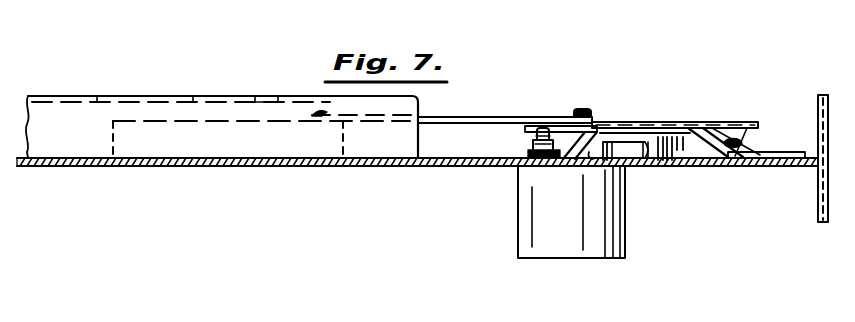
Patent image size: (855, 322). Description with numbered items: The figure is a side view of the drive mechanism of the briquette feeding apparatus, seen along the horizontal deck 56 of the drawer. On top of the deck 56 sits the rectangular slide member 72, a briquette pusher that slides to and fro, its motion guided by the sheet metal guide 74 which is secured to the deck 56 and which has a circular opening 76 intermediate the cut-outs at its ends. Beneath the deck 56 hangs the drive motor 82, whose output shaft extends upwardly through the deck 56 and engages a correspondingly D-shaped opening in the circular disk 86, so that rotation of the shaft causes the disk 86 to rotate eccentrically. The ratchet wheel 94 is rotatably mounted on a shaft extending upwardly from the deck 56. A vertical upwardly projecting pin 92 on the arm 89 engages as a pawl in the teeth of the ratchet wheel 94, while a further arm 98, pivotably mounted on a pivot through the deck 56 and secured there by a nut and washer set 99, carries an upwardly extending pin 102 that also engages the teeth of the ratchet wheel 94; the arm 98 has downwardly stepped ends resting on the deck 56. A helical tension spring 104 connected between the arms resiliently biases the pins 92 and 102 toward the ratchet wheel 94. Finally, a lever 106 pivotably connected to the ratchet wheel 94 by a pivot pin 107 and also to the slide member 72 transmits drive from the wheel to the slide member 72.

The sheet metal guide 74 is at (125, 96).
The circular opening 76 is at (196, 96).
The slide member 72 is at (372, 147).
The deck 56 is at (208, 167).
The lever 106 is at (497, 117).
The pivot pin 107 is at (581, 109).
The nut and washer set 99 is at (517, 146).
The disk 86 is at (590, 167).
The ratchet wheel 94 is at (640, 122).
The further arm 98 is at (652, 167).
The pin 102 is at (682, 117).
The pin 92 is at (700, 122).
The helical tension spring 104 is at (752, 134).
The arm 89 is at (797, 170).
The drive motor 82 is at (563, 243).